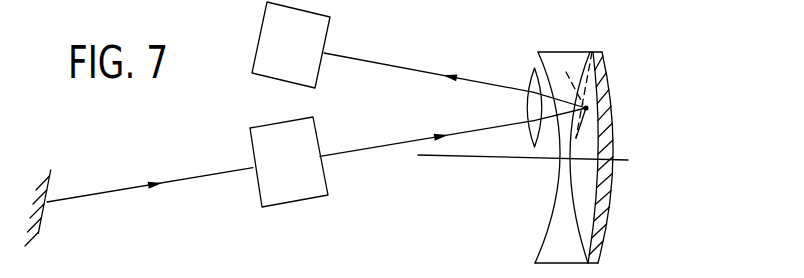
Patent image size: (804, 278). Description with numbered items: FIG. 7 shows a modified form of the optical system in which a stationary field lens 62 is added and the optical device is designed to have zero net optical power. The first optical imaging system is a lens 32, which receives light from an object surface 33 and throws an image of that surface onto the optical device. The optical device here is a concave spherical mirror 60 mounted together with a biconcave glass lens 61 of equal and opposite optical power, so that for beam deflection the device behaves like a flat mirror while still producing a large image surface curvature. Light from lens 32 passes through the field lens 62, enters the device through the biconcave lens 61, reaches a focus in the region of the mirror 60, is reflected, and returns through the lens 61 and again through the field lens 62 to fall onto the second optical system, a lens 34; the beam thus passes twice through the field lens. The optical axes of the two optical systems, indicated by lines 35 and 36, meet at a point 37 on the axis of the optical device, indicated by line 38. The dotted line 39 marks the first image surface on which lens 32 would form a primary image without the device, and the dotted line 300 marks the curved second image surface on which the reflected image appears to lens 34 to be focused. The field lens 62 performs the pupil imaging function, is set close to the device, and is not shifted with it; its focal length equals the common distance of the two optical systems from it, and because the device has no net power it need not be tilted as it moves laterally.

The lens 32 is at (289, 162).
The object surface 33 is at (52, 173).
The lens 34 is at (291, 45).
The optical axis of lens 32 35 is at (398, 143).
The optical axis of lens 34 36 is at (428, 72).
The point 37 is at (588, 108).
The axis of the optical device 38 is at (485, 160).
The first image surface 39 is at (595, 128).
The concave spherical mirror 60 is at (606, 51).
The biconcave glass lens 61 is at (553, 58).
The field lens 62 is at (532, 74).
The second image surface 300 is at (596, 78).